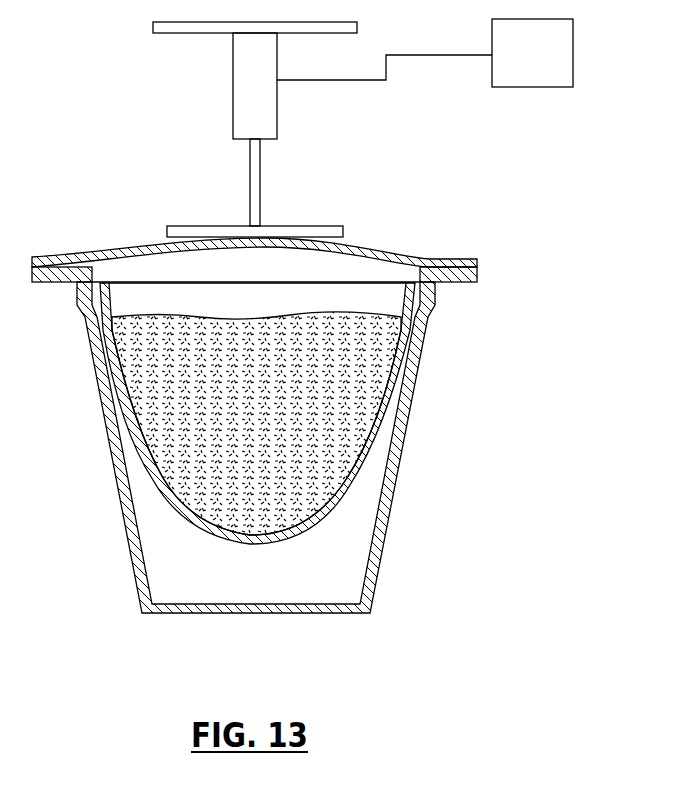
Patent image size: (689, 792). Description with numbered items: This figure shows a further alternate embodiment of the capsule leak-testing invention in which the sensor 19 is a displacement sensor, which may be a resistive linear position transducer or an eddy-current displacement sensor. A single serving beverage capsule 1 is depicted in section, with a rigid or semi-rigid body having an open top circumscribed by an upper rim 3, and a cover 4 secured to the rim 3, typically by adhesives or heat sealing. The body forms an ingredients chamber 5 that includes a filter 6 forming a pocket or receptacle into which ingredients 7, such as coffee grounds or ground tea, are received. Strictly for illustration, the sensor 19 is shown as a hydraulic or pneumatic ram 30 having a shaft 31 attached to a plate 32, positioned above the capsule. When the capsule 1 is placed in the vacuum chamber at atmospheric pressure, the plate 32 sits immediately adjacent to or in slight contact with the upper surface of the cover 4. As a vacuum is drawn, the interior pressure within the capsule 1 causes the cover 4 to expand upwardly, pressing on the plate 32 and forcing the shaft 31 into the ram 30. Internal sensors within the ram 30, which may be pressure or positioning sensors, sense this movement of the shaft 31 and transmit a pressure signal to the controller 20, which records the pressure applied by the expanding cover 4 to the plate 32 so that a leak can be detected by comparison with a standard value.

The beverage capsule 1 is at (398, 487).
The upper rim 3 is at (455, 283).
The cover 4 is at (430, 260).
The ingredients chamber 5 is at (262, 595).
The filter 6 is at (153, 497).
The powder charge 7 is at (264, 427).
The sensor 19 is at (168, 126).
The controller 20 is at (548, 70).
The ram 30 is at (277, 119).
The shaft 31 is at (260, 176).
The plate 32 is at (318, 226).